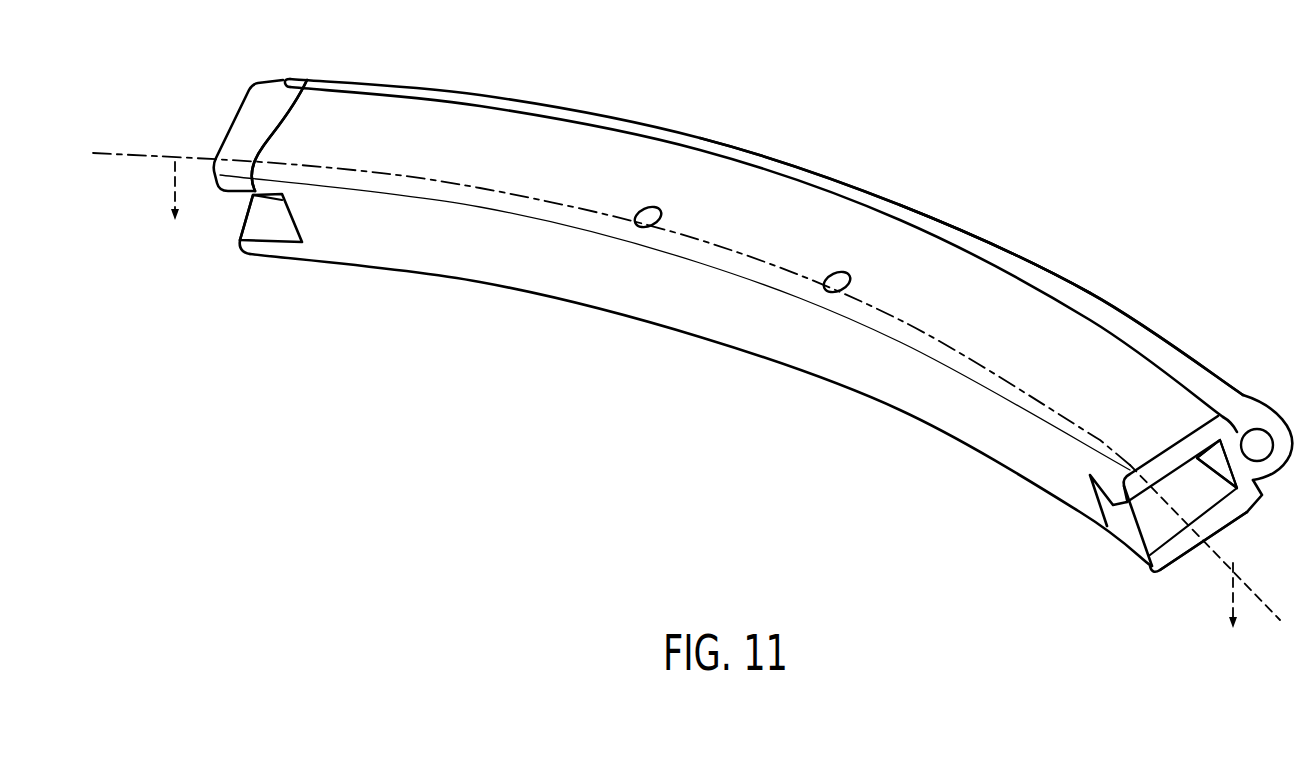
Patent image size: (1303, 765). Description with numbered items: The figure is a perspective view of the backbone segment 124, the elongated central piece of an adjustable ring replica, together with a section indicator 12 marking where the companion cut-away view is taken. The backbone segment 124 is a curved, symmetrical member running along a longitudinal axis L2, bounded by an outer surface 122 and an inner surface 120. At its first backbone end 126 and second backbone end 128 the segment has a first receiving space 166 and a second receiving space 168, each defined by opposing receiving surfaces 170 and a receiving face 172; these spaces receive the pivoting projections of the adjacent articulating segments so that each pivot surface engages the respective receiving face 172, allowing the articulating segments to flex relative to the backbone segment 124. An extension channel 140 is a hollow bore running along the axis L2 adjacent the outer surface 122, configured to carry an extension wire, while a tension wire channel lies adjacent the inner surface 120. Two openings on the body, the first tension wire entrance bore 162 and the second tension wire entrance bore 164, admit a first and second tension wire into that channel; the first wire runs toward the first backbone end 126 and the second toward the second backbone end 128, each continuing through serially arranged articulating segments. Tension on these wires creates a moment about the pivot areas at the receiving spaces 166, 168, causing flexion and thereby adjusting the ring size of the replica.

The inner surface 120 is at (1035, 456).
The outer surface 122 is at (1055, 273).
The backbone segment 124 is at (918, 121).
The first backbone end 126 is at (1170, 553).
The second backbone end 128 is at (241, 221).
The extension channel 140 is at (1263, 451).
The first tension wire entrance bore 162 is at (836, 288).
The second tension wire entrance bore 164 is at (647, 222).
The first receiving space 166 is at (1137, 523).
The second receiving space 168 is at (268, 224).
The receiving surfaces 170 is at (245, 198).
The receiving face 172 is at (307, 80).
The section view indicator 12 is at (705, 416).
The longitudinal axis L2 is at (122, 152).